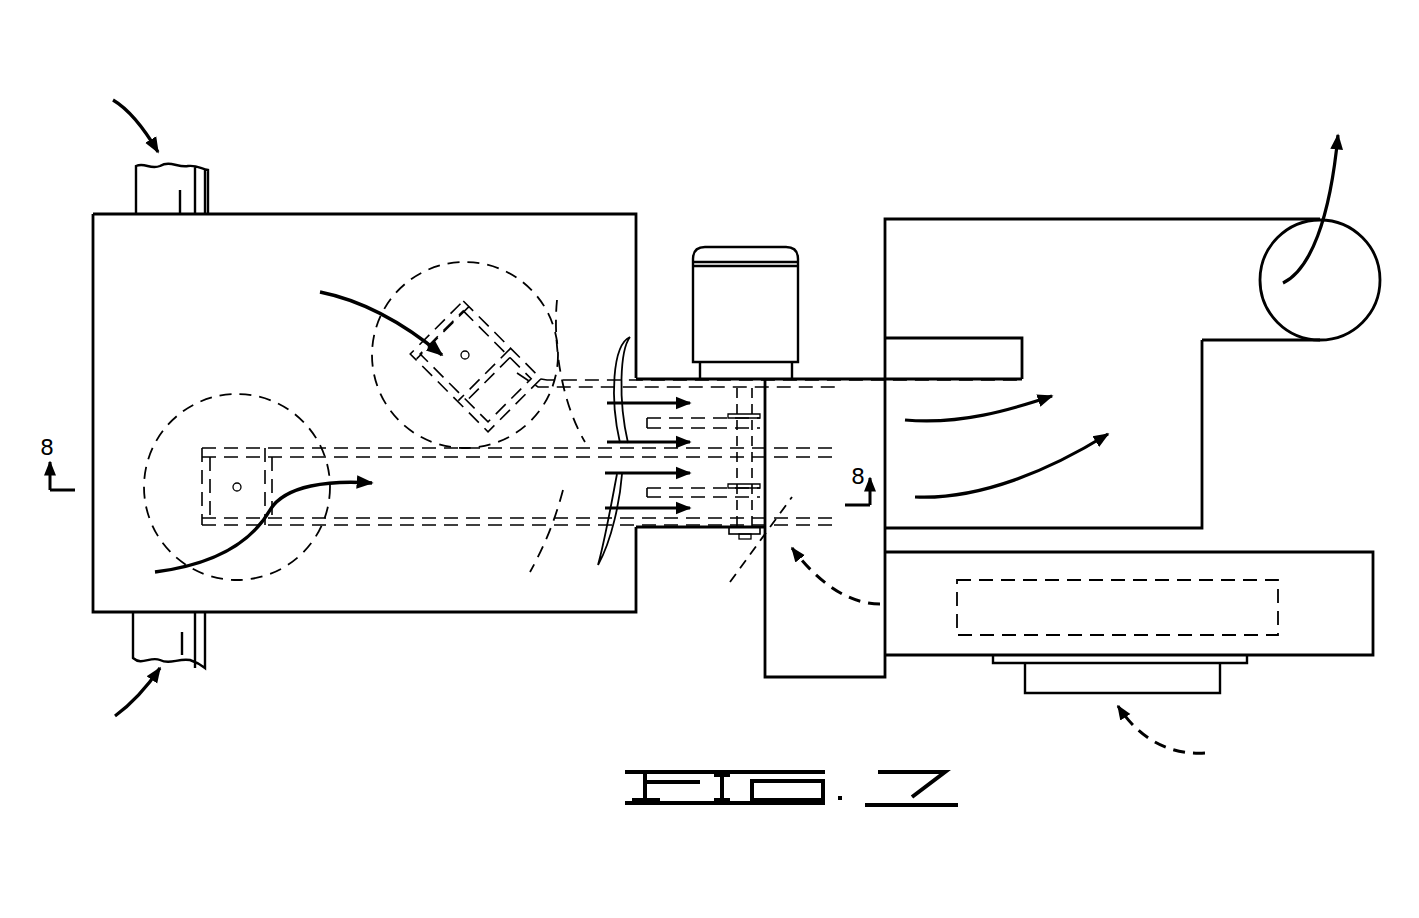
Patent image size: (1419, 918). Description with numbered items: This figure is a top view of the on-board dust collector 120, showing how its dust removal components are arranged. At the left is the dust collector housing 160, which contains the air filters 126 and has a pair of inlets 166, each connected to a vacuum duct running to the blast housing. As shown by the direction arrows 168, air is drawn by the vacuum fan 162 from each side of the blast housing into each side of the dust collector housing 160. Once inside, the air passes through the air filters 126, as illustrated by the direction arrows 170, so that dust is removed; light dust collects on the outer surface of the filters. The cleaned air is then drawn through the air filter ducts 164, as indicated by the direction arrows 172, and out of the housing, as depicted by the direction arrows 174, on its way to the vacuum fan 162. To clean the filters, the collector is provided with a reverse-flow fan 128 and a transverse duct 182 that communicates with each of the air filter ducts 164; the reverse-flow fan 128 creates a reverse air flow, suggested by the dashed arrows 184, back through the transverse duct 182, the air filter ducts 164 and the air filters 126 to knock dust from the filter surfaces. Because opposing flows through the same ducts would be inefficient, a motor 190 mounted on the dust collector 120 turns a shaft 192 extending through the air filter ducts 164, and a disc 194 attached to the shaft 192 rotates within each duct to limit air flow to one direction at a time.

The on-board dust collector 120 is at (516, 168).
The air filters 126 is at (210, 395).
The reverse-flow fan 128 is at (1255, 552).
The dust collector housing 160 is at (318, 210).
The vacuum fan 162 is at (1076, 218).
The air filter ducts 164 is at (562, 310).
The inlets 166 is at (180, 172).
The direction arrows 168 is at (135, 110).
The direction arrows 170 is at (348, 290).
The direction arrows 172 is at (630, 337).
The direction arrows 174 is at (1338, 180).
The transverse duct 182 is at (788, 614).
The debris flow 184 is at (837, 600).
The motor 190 is at (733, 245).
The shaft 192 is at (745, 401).
The disc 194 is at (830, 407).